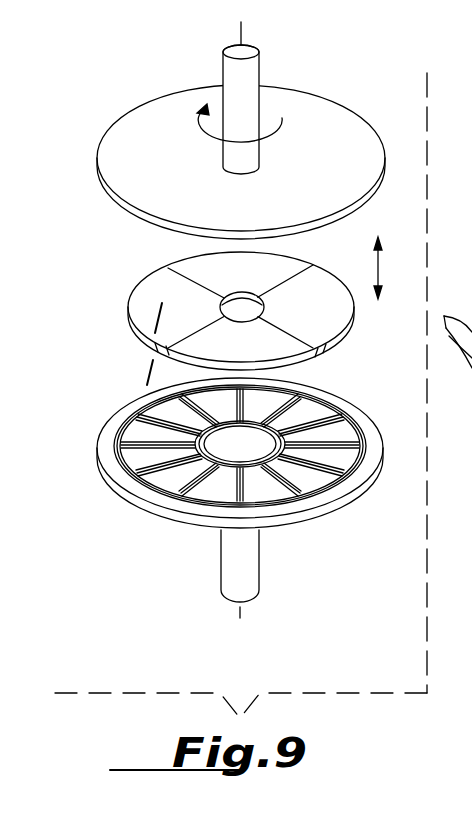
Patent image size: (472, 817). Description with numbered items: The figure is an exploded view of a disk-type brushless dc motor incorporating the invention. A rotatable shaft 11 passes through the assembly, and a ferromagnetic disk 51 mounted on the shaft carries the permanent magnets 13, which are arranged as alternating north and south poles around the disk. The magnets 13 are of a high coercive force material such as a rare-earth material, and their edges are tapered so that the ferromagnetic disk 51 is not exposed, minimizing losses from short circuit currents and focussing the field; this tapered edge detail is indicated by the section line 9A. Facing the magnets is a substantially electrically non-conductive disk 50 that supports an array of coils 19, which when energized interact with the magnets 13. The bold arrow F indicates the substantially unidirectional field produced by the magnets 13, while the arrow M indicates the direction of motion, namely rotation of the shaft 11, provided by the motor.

The rotatable shaft 11 is at (244, 78).
The arrow indicating direction of motion M is at (282, 118).
The ferromagnetic disk 51 is at (130, 207).
The permanent magnets 13 is at (150, 280).
The arrow indicating unidirectional field F is at (378, 265).
The section line for FIG. 9A is at (142, 319).
The coils 19 is at (125, 470).
The electrically non-conductive disk 50 is at (192, 515).